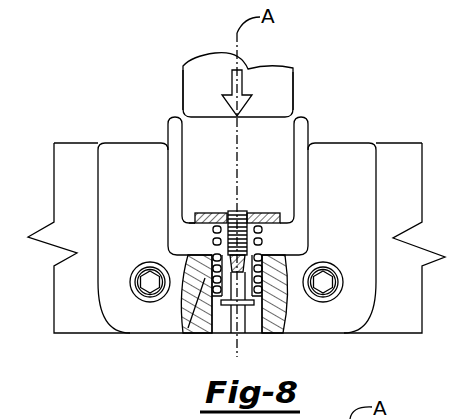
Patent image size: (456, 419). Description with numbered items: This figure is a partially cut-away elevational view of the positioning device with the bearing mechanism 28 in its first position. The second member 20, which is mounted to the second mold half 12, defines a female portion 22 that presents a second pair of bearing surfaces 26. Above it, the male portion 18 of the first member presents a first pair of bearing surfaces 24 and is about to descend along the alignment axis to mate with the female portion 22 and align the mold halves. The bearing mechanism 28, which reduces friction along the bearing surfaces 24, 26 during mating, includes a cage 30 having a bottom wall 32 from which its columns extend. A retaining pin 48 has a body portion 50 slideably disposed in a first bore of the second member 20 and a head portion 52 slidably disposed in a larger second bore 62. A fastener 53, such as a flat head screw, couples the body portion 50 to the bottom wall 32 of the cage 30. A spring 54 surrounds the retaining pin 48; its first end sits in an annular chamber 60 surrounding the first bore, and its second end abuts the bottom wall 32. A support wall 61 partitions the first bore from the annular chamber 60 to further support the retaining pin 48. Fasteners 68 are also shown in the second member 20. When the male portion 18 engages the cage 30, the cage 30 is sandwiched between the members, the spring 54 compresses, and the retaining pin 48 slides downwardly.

The second mold half 12 is at (63, 143).
The male portion 18 is at (290, 76).
The second member 20 is at (110, 265).
The female portion 22 is at (194, 248).
The first pair of bearing surfaces 24 is at (183, 78).
The second pair of bearing surfaces 26 is at (198, 212).
The bearing mechanism 28 is at (310, 177).
The cage 30 is at (168, 138).
The bottom wall 32 is at (214, 211).
The retaining pin 48 is at (211, 297).
The body portion 50 is at (271, 263).
The head portion 52 is at (256, 327).
The fastener 53 is at (238, 211).
The spring 54 is at (261, 232).
The annular chamber 60 is at (213, 268).
The support wall 61 is at (253, 298).
The second bore 62 is at (243, 327).
The fastener 68 is at (143, 290).